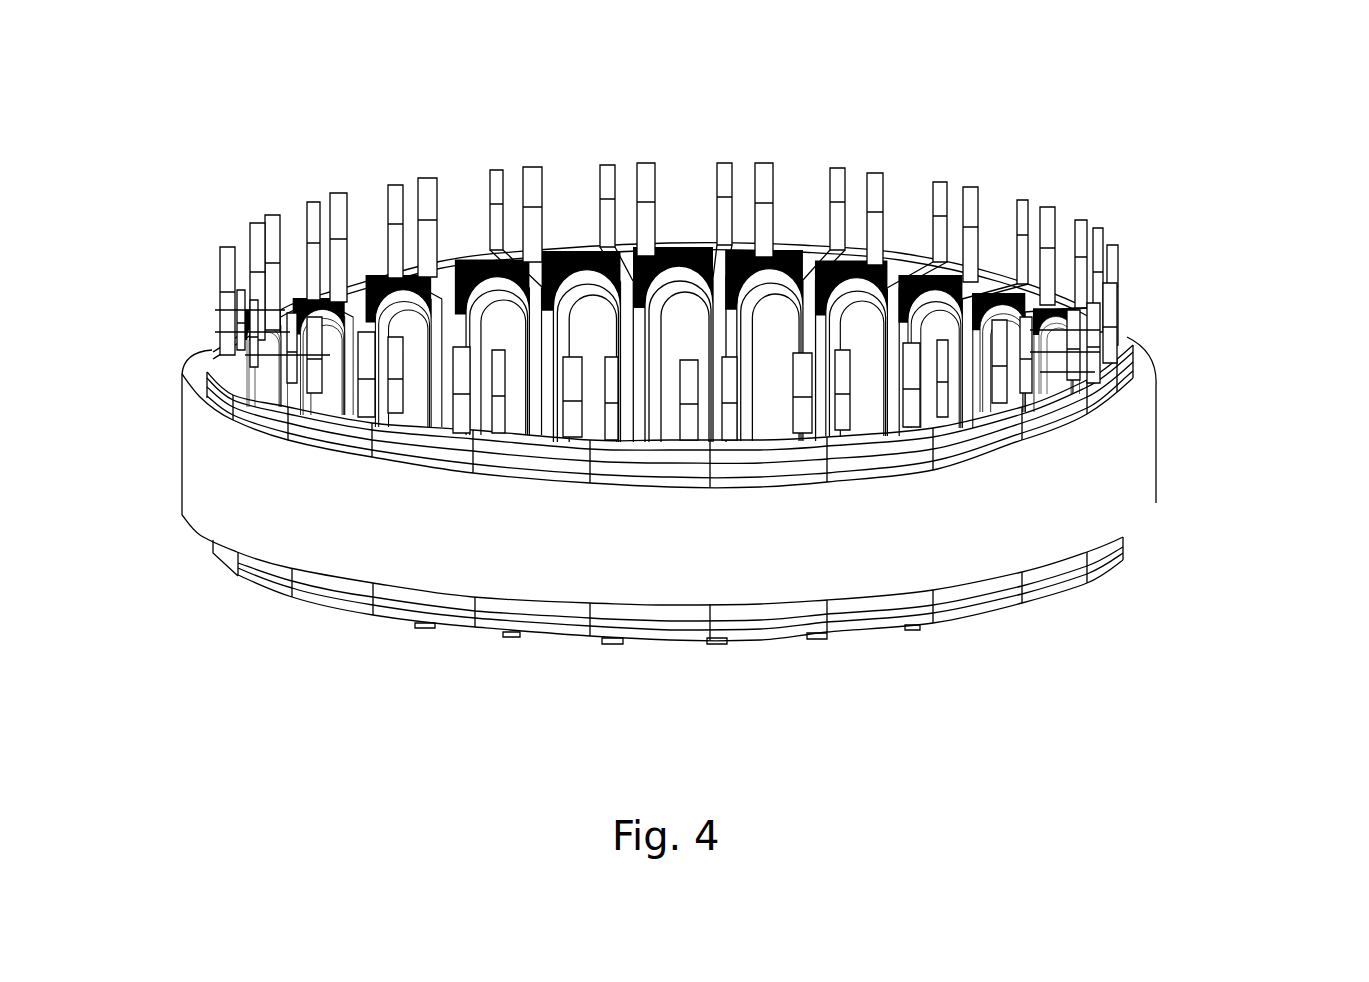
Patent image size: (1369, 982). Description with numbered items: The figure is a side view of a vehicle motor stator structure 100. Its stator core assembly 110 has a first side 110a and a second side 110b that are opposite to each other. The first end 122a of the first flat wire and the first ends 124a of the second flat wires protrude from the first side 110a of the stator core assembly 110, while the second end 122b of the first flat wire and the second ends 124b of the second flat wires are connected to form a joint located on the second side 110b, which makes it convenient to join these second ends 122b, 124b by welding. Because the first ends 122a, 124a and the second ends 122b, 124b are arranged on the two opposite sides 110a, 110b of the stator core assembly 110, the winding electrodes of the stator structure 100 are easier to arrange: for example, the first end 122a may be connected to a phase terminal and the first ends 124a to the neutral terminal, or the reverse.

The stator structure 100 is at (150, 112).
The stator core assembly 110 is at (1148, 447).
The first side 110a is at (1160, 352).
The second side 110b is at (1160, 560).
The first end of the first flat wire 122a is at (873, 173).
The first ends of the second flat wires 124a is at (940, 183).
The second end of the first flat wire 122b is at (817, 641).
The second ends of the second flat wires 124b is at (817, 641).